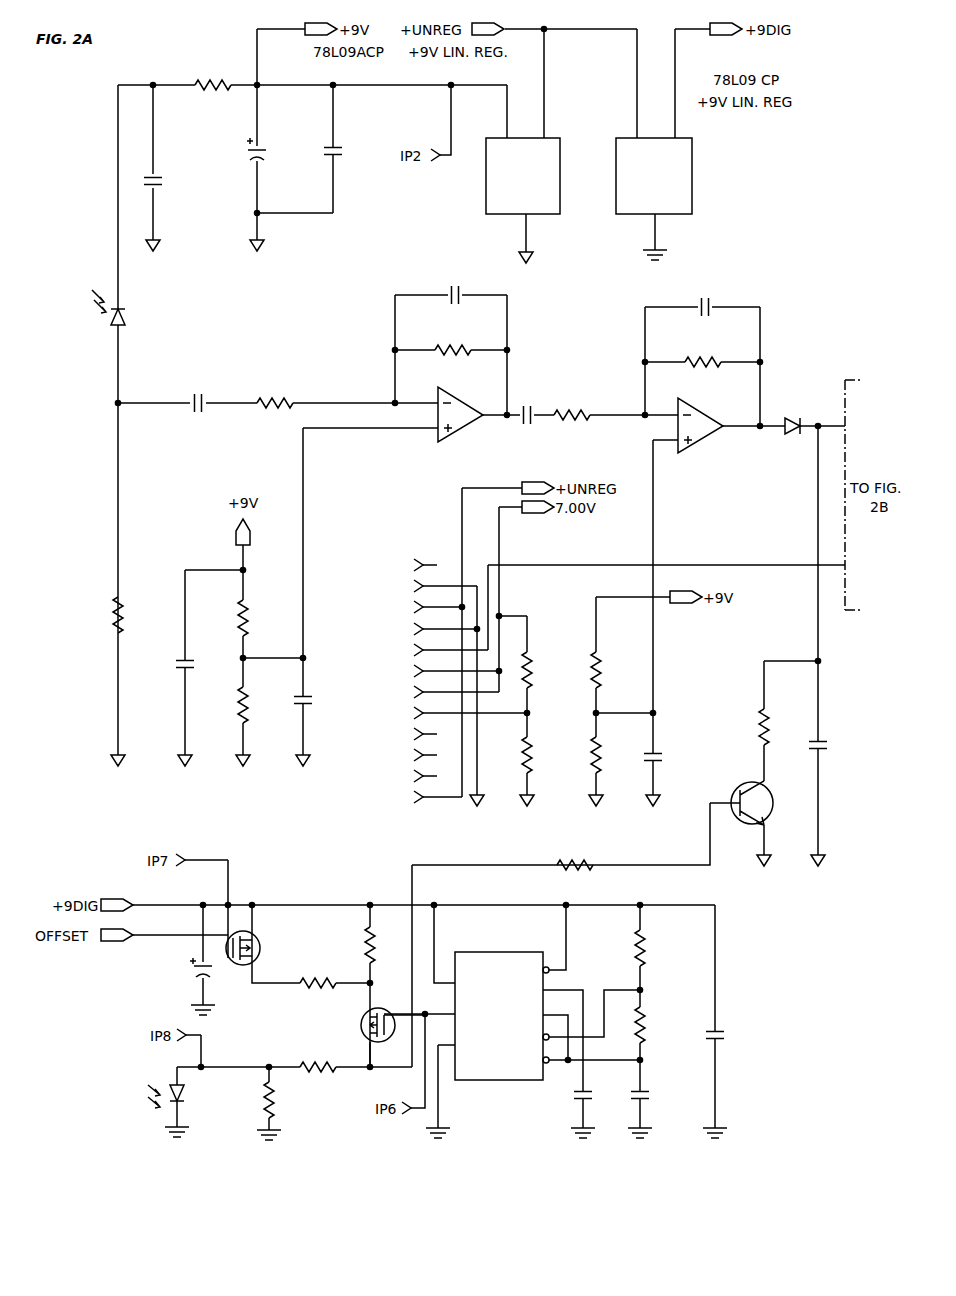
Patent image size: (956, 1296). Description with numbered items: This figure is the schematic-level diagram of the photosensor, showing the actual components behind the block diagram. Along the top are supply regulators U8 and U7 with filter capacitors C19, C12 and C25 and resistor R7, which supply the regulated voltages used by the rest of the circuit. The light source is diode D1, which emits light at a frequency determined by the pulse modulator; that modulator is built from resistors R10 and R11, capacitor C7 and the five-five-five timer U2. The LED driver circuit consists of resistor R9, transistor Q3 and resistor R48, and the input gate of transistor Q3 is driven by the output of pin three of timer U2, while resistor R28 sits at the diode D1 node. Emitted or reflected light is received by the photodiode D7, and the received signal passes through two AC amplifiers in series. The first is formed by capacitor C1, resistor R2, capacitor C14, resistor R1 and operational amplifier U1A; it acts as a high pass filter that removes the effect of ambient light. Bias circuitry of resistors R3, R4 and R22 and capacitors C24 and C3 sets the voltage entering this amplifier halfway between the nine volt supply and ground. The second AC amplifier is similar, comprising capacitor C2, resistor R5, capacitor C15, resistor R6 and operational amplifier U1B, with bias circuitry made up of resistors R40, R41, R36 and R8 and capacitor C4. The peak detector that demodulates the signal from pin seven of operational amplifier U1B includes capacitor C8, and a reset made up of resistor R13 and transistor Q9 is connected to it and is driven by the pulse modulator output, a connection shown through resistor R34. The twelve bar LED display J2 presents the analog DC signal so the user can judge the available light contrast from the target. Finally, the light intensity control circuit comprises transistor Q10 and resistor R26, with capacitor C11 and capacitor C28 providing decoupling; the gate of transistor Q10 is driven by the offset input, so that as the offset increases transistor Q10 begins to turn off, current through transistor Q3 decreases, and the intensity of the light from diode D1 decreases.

The resistor 10.0K R7 is at (210, 86).
The capacitor .1uF 25V C19 is at (171, 168).
The capacitor 47uF 18V C12 is at (275, 157).
The capacitor .1uF 25V C25 is at (351, 149).
The voltage regulator 78L09ACP U8 is at (502, 175).
The voltage regulator 78L09CP U7 is at (633, 175).
The photodiode D7 is at (140, 322).
The capacitor C1 is at (198, 406).
The resistor R2 is at (275, 406).
The capacitor C14 is at (460, 298).
The resistor R1 is at (449, 351).
The operational amplifier U1A is at (462, 431).
The capacitor C2 is at (528, 415).
The resistor R5 is at (573, 415).
The capacitor C15 is at (710, 308).
The resistor R6 is at (701, 362).
The operational amplifier U1B is at (712, 437).
The transistor Q3 is at (535, 721).
The resistor R22 is at (139, 616).
The capacitor C24 is at (203, 671).
The resistor R4 is at (265, 617).
The resistor R3 is at (265, 703).
The capacitor C3 is at (323, 706).
The twelve bar LED display J2 is at (399, 681).
The resistor R40 is at (548, 670).
The resistor R41 is at (545, 753).
The resistor R36 is at (618, 670).
The resistor R8 is at (613, 755).
The capacitor C4 is at (672, 759).
The resistor R13 is at (739, 725).
The capacitor C8 is at (754, 913).
The transistor Q9 is at (764, 812).
The resistor 10.0K R34 is at (577, 865).
The capacitor 47uF 16V C11 is at (182, 978).
The transistor Q10 is at (270, 953).
The resistor R26 is at (313, 983).
The resistor R9 is at (387, 946).
The resistor R48 is at (313, 1066).
The diode D1 is at (184, 1112).
The resistor 1.0K R28 is at (249, 1097).
The 555 timer U2 is at (501, 1018).
The resistor R10 is at (663, 952).
The resistor R11 is at (660, 1021).
The capacitor C7 is at (598, 1098).
The capacitor .1uF 25V C28 is at (732, 1037).